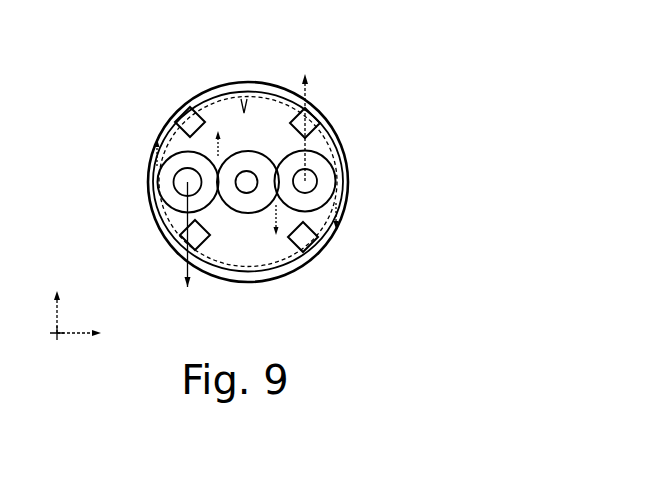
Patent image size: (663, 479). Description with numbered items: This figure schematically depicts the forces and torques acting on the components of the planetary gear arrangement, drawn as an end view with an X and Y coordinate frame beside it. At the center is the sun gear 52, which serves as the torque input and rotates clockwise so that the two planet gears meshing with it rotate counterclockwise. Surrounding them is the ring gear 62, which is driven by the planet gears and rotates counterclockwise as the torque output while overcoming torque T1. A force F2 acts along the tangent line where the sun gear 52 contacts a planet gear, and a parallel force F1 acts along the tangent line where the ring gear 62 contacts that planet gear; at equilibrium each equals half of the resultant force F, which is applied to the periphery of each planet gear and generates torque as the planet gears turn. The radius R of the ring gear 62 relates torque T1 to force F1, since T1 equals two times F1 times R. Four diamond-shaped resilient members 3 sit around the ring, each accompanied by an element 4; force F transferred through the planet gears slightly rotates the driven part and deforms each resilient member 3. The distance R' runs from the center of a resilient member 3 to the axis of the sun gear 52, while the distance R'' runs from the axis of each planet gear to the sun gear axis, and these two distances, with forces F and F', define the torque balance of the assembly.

The ring gear 62 is at (147, 190).
The sun gear 52 is at (247, 215).
The resilient member 3 is at (173, 110).
The guide element 4 is at (192, 108).
The force F is at (307, 92).
The force F1 is at (158, 157).
The force F2 is at (225, 143).
The radius of the ring gear R is at (188, 289).
The distance from center of resilient member to axis of sun gear R' is at (258, 64).
The distance from planet gear axis to sun gear axis R'' is at (356, 153).
The X axis X is at (84, 333).
The Y axis Y is at (57, 299).